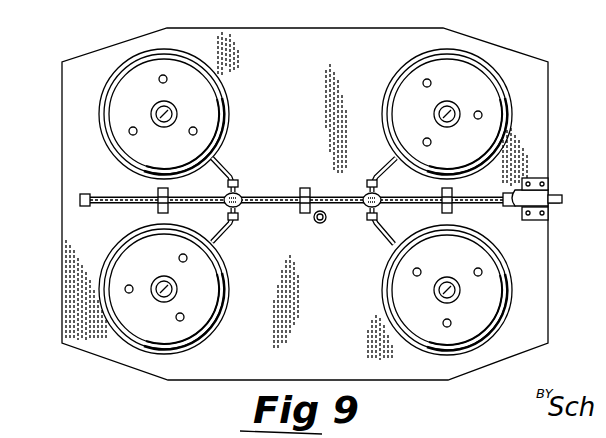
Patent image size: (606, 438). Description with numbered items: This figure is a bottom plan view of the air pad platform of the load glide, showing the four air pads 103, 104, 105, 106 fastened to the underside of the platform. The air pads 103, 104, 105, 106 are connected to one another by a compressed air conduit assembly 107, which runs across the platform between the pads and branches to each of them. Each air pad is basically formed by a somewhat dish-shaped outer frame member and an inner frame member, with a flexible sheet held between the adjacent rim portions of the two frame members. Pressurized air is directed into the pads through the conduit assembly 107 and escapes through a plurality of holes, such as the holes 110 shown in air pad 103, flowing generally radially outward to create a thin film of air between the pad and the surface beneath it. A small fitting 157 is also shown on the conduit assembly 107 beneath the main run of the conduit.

The air pad 103 is at (175, 57).
The air pad 104 is at (98, 285).
The air pad 105 is at (483, 62).
The air pad 106 is at (513, 290).
The compressed air conduit assembly 107 is at (286, 197).
The holes 110 is at (192, 127).
The fitting 157 is at (316, 222).